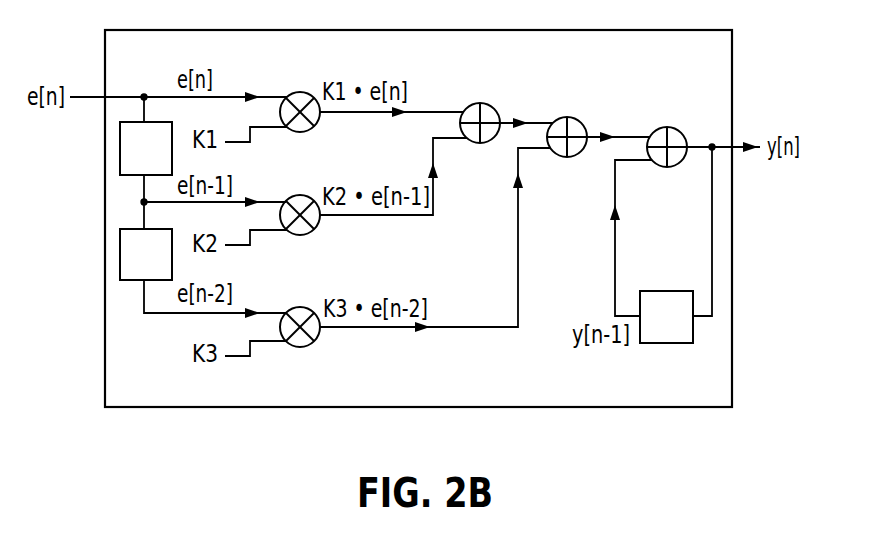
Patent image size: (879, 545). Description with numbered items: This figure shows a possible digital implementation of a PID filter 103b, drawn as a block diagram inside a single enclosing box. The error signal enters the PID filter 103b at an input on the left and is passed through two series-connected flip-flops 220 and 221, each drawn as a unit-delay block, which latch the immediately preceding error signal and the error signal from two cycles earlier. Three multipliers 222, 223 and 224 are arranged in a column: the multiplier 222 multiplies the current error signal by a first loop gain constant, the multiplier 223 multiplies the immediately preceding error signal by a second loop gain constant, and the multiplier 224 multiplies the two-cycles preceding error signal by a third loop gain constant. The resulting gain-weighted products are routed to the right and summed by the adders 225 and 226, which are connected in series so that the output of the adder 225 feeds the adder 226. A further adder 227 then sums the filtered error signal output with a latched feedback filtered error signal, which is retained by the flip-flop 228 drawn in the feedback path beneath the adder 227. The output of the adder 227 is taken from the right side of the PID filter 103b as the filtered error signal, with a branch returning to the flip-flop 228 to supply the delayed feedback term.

The PID filter 103b is at (162, 409).
The flip-flop 220 is at (120, 150).
The flip-flop 221 is at (120, 257).
The multiplier 222 is at (297, 92).
The multiplier 223 is at (297, 195).
The multiplier 224 is at (293, 306).
The adder 225 is at (486, 103).
The adder 226 is at (573, 118).
The adder 227 is at (677, 127).
The flip-flop 228 is at (665, 344).